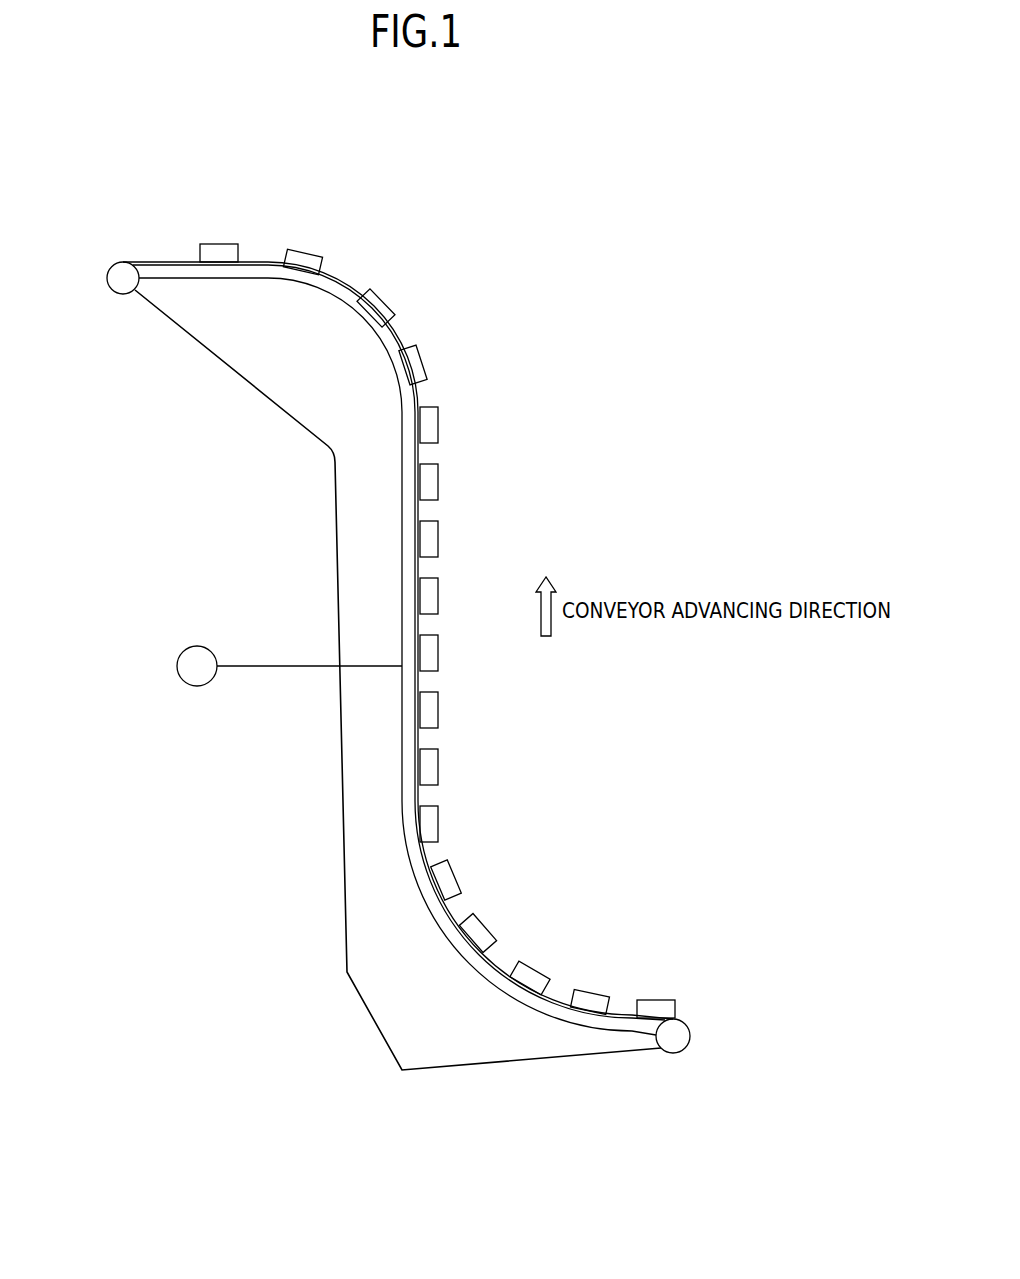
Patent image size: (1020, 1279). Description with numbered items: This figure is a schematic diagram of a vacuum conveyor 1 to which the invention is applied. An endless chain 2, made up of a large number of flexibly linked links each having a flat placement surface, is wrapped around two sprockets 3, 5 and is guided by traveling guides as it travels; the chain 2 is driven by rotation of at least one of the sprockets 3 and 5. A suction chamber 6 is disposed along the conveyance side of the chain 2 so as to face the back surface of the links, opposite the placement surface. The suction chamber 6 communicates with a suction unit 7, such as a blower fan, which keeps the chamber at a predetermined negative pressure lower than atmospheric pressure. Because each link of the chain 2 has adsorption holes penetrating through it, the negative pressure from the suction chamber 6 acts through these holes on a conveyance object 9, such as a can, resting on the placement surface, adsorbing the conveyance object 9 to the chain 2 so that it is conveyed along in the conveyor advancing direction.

The vacuum conveyor 1 is at (535, 150).
The endless chain 2 is at (423, 734).
The sprocket 3 is at (690, 1031).
The sprocket 5 is at (107, 279).
The suction chamber 6 is at (404, 566).
The suction unit 7 is at (177, 668).
The conveyance object 9 is at (380, 302).